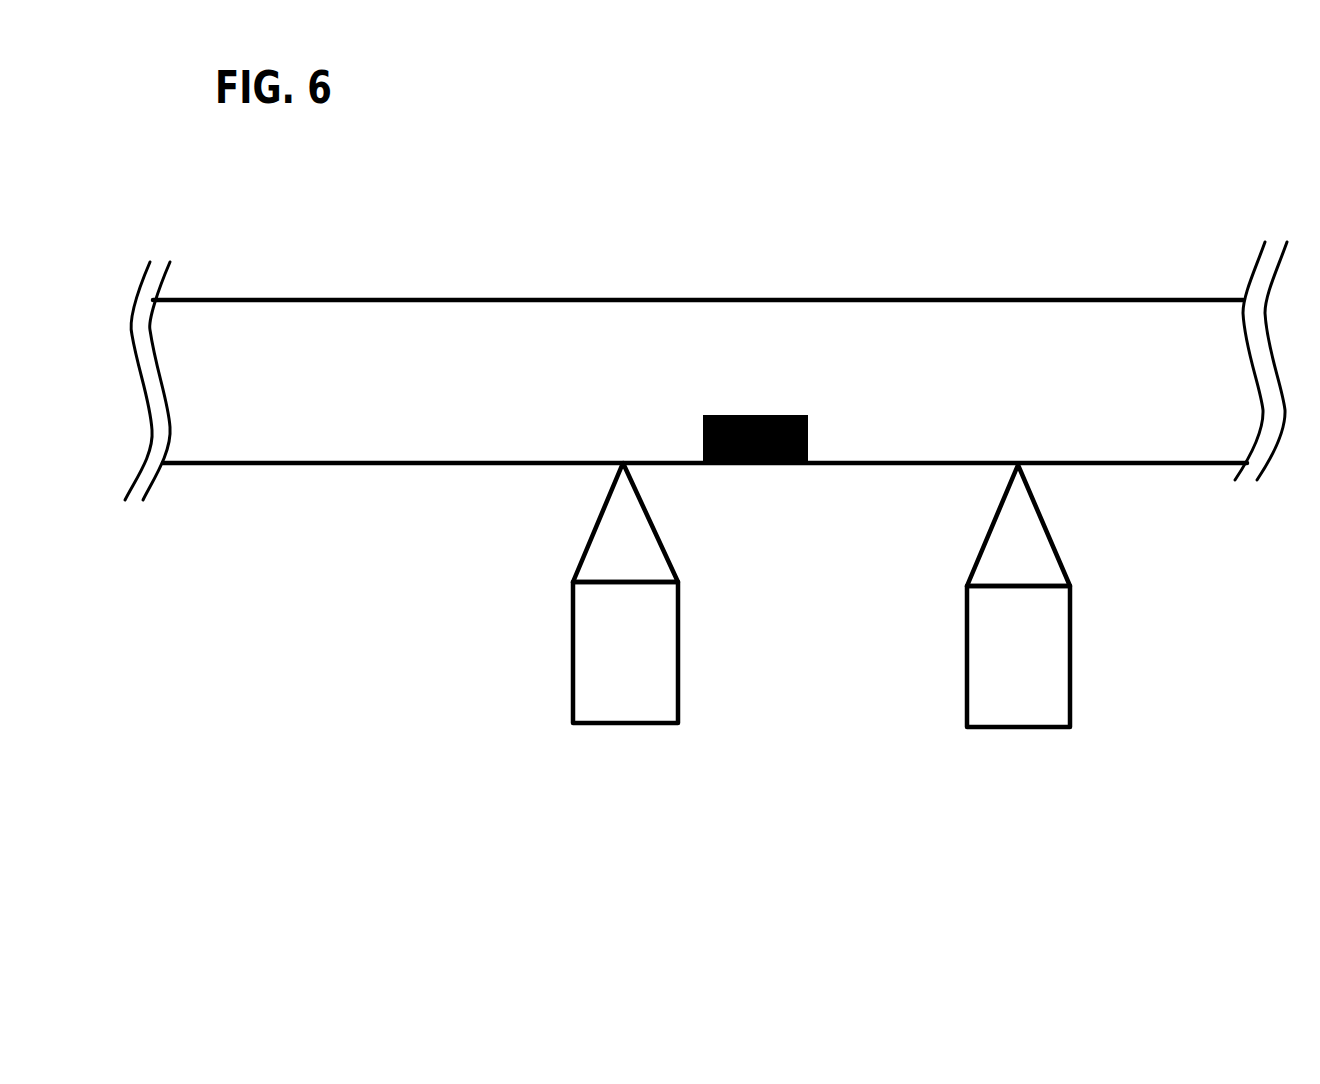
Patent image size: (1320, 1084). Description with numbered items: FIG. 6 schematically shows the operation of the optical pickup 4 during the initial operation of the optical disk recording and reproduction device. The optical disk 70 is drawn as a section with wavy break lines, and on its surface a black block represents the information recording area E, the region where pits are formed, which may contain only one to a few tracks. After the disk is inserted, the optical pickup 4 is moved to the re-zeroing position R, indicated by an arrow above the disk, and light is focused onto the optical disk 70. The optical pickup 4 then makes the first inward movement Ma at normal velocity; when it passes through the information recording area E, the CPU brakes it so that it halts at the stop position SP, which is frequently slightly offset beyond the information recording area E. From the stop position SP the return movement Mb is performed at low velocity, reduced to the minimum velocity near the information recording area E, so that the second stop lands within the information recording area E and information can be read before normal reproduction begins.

The optical disk 70 is at (587, 327).
The optical pickup 4 is at (588, 660).
The information recording area E is at (752, 465).
The re-zeroing position R is at (1032, 265).
The first inward movement Ma is at (718, 635).
The return movement (second movement) Mb is at (852, 688).
The stop position SP is at (625, 767).